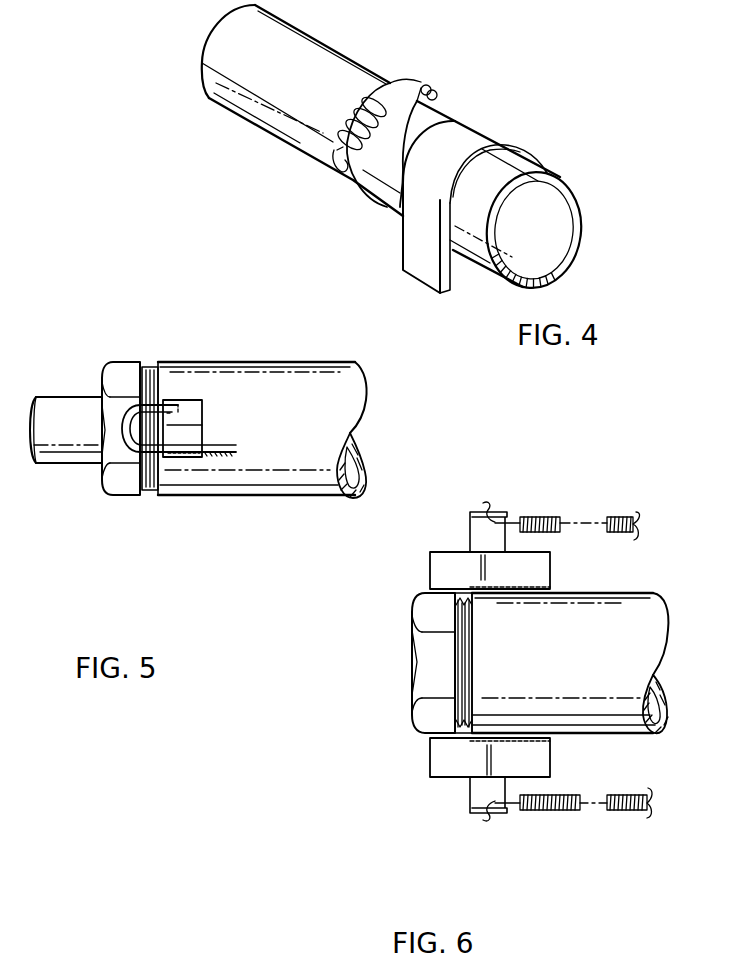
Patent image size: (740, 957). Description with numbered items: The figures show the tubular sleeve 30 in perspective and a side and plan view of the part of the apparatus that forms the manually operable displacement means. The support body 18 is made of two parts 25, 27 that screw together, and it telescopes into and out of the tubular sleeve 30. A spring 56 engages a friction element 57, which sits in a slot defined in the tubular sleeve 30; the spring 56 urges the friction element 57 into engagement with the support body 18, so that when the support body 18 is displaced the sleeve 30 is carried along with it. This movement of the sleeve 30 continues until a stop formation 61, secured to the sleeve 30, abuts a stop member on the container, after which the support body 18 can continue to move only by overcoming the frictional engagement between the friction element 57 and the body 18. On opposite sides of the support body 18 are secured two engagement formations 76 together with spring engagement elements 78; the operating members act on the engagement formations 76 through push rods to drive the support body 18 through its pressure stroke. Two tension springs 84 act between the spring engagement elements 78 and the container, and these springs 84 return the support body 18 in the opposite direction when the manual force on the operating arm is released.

In FIG. 5, the support body 18 is at (253, 378).
In FIG. 6, the support body 18 is at (640, 620).
In FIG. 5, the part of the support body 25 is at (350, 373).
In FIG. 6, the part of the support body 25 is at (655, 652).
In FIG. 5, the part of the support body 27 is at (148, 370).
In FIG. 6, the part of the support body 27 is at (425, 667).
In FIG. 4, the tubular sleeve 30 is at (348, 77).
In FIG. 4, the spring 56 is at (437, 91).
In FIG. 4, the friction element 57 is at (363, 192).
In FIG. 4, the stop formation 61 is at (470, 138).
In FIG. 5, the engagement formation 76 is at (137, 448).
In FIG. 6, the engagement formation 76 is at (537, 568).
In FIG. 5, the spring engagement element 78 is at (193, 437).
In FIG. 6, the spring engagement element 78 is at (480, 540).
In FIG. 6, the tension spring 84 is at (612, 513).